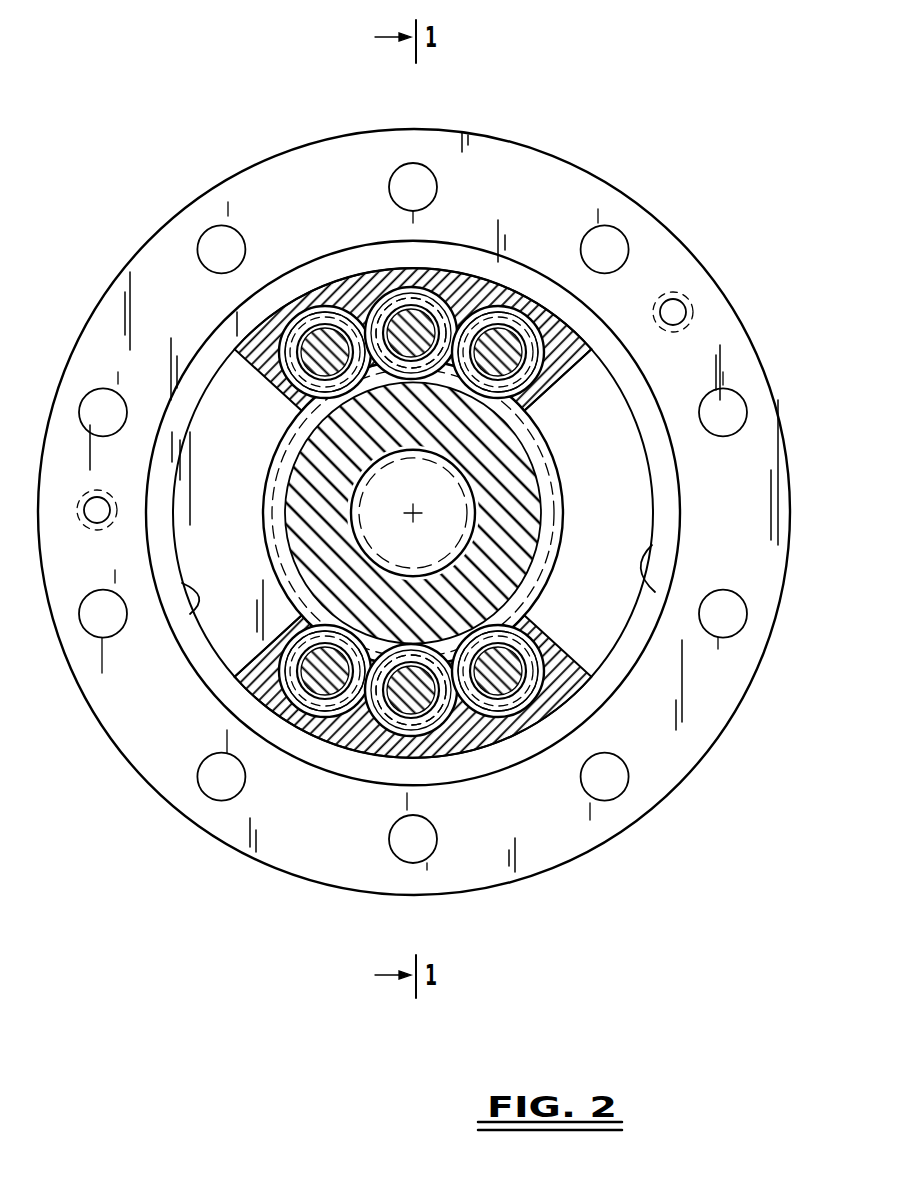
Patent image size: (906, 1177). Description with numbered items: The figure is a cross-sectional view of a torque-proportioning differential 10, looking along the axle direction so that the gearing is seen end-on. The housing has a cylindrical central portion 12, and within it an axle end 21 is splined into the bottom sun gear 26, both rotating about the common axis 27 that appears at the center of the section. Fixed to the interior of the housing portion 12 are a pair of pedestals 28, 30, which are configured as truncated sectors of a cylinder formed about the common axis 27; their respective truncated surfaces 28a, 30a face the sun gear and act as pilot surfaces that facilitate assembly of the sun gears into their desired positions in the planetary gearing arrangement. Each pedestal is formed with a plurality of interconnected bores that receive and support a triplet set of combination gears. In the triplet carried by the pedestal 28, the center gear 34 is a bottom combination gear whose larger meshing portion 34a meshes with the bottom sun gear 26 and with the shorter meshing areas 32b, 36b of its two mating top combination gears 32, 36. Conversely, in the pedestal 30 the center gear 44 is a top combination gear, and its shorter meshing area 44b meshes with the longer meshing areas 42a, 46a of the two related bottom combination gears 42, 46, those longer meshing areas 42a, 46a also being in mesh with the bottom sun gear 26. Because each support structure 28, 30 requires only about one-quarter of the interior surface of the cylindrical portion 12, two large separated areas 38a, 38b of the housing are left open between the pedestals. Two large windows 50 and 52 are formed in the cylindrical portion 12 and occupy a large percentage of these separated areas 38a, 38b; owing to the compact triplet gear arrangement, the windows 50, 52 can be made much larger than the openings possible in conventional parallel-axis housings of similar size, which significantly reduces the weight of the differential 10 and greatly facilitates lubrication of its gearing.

The differential 10 is at (180, 133).
The cylindrical central portion 12 is at (657, 520).
The axle end 21 is at (377, 509).
The sun gear 26 is at (525, 517).
The common axis 27 is at (418, 518).
The pedestal 28 is at (270, 372).
The truncated surface 28a is at (300, 428).
The pedestal 30 is at (562, 650).
The truncated surface 30a is at (528, 600).
The top combination gear 32 is at (330, 330).
The shorter meshing area 32b is at (287, 345).
The bottom combination gear 34 is at (449, 283).
The larger meshing portion 34a is at (402, 290).
The top combination gear 36 is at (515, 335).
The shorter meshing area 36b is at (540, 352).
The separated area 38a is at (200, 597).
The separated area 38b is at (670, 590).
The bottom combination gear 42 is at (530, 677).
The longer meshing area 42a is at (493, 713).
The top combination gear 44 is at (422, 705).
The shorter meshing area 44b is at (387, 723).
The bottom combination gear 46 is at (330, 687).
The longer meshing area 46a is at (287, 678).
The window 50 is at (242, 643).
The window 52 is at (552, 385).